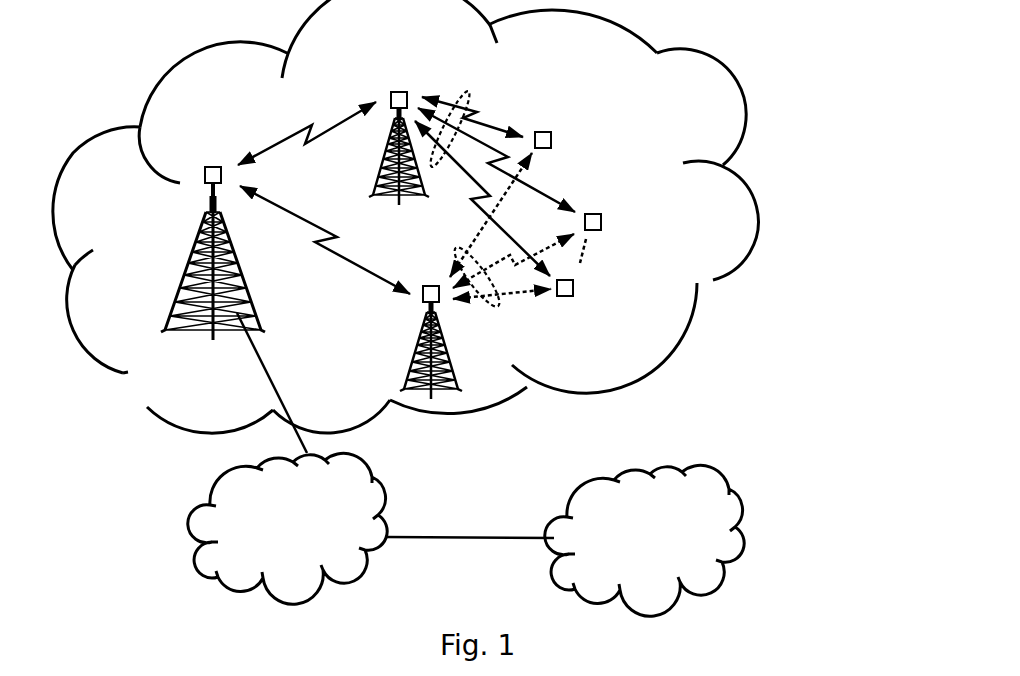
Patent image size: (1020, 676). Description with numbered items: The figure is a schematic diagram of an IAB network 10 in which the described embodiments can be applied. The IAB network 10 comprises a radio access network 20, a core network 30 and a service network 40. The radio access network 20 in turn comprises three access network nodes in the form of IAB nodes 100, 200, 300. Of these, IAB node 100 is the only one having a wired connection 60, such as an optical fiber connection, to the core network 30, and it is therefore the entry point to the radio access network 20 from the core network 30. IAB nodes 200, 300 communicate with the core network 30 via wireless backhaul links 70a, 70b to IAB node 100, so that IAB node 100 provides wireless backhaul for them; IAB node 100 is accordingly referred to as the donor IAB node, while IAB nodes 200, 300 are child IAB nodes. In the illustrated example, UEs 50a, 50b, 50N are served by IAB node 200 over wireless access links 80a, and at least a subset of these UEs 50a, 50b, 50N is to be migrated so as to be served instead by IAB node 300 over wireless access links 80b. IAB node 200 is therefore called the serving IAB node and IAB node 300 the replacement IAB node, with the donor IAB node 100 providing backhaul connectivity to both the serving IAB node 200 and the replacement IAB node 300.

The IAB network 10 is at (782, 92).
The (radio) access network 20 is at (179, 402).
The core network 30 is at (276, 539).
The service network 40 is at (633, 554).
The UE 50a is at (553, 140).
The UE 50b is at (602, 222).
The UE 50N is at (575, 288).
The wired connection 60 is at (271, 380).
The wireless backhaul link 70a is at (327, 128).
The wireless backhaul link 70b is at (303, 221).
The wireless access links 80a is at (466, 96).
The wireless access links 80b is at (488, 300).
The IAB node 100 is at (213, 165).
The IAB node 200 is at (399, 90).
The IAB node 300 is at (431, 285).